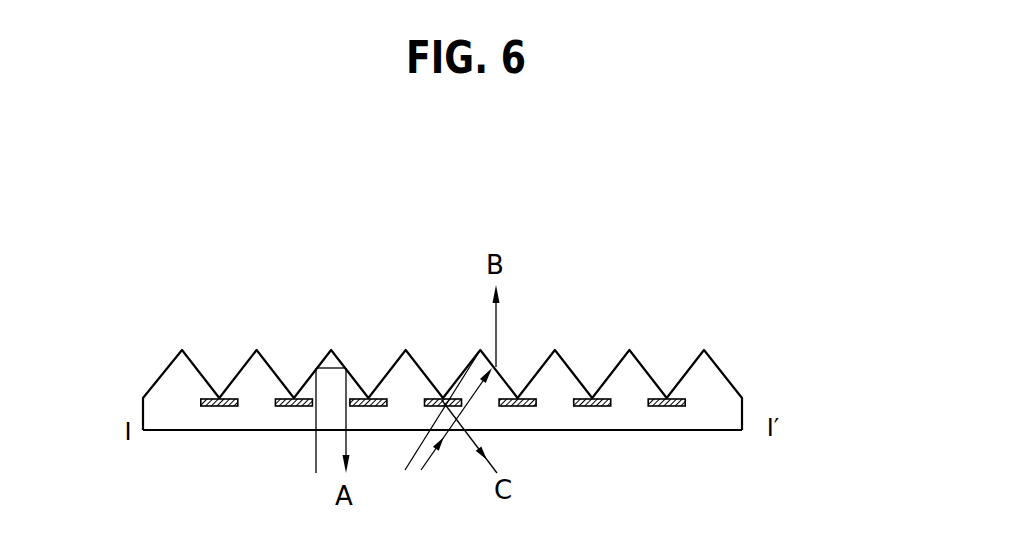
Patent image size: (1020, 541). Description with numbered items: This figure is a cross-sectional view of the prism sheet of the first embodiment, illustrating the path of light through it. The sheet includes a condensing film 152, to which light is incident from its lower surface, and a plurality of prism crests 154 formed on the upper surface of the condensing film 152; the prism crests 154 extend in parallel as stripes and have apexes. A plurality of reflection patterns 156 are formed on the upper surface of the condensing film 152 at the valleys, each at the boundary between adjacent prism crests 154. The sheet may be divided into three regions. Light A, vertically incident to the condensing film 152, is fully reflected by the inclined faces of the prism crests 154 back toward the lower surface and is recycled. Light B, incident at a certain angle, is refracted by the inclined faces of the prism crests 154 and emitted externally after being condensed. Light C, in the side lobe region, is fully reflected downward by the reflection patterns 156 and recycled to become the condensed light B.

The condensing film 152 is at (742, 430).
The prism crests 154 is at (717, 388).
The reflection patterns 156 is at (663, 403).